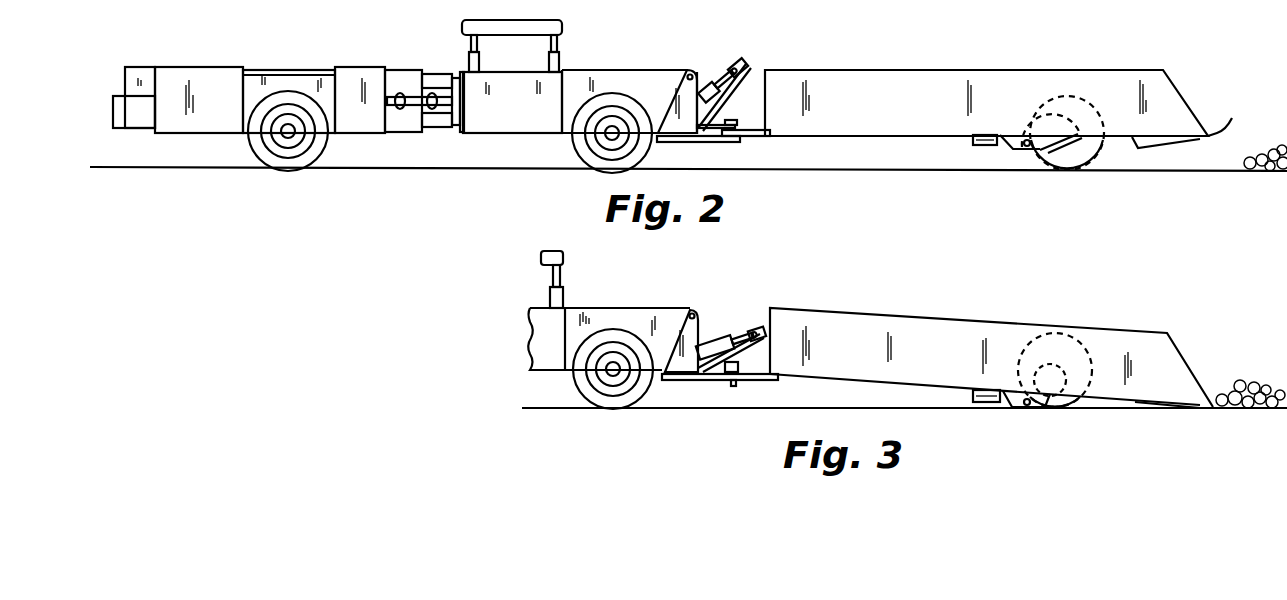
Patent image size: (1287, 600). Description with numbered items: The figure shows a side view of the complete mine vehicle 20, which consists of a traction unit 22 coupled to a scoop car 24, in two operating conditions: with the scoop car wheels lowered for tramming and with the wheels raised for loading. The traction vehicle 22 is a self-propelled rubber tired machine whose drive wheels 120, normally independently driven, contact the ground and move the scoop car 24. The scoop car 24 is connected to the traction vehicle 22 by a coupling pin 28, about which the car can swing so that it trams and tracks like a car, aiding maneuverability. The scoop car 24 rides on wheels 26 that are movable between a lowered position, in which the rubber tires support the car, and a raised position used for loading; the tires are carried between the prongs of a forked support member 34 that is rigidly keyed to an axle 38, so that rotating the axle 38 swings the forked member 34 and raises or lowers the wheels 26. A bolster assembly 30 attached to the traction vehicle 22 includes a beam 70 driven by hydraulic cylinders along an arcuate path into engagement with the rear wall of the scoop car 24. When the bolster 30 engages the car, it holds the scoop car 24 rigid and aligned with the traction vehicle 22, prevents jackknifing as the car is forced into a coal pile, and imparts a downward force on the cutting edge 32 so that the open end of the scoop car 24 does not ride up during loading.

In FIG. 2, the mine vehicle 20 is at (636, 47).
In FIG. 3, the mine vehicle 20 is at (829, 318).
In FIG. 2, the traction vehicle 22 is at (512, 76).
In FIG. 2, the scoop car 24 is at (940, 117).
In FIG. 3, the scoop car 24 is at (952, 363).
In FIG. 2, the wheels 26 is at (1091, 157).
In FIG. 3, the wheels 26 is at (1080, 408).
In FIG. 2, the coupling pin 28 is at (728, 120).
In FIG. 3, the coupling pin 28 is at (735, 386).
In FIG. 2, the bolster assembly 30 is at (711, 83).
In FIG. 3, the bolster assembly 30 is at (717, 342).
In FIG. 2, the cutting edge 32 is at (1247, 141).
In FIG. 3, the cutting edge 32 is at (1212, 400).
In FIG. 2, the forked support member 34 is at (1062, 142).
In FIG. 3, the forked support member 34 is at (1052, 368).
In FIG. 2, the axle 38 is at (1022, 150).
In FIG. 3, the axle 38 is at (1022, 410).
In FIG. 2, the beam 70 is at (742, 62).
In FIG. 3, the beam 70 is at (758, 330).
In FIG. 2, the drive wheels 120 is at (256, 150).
In FIG. 3, the drive wheels 120 is at (573, 387).